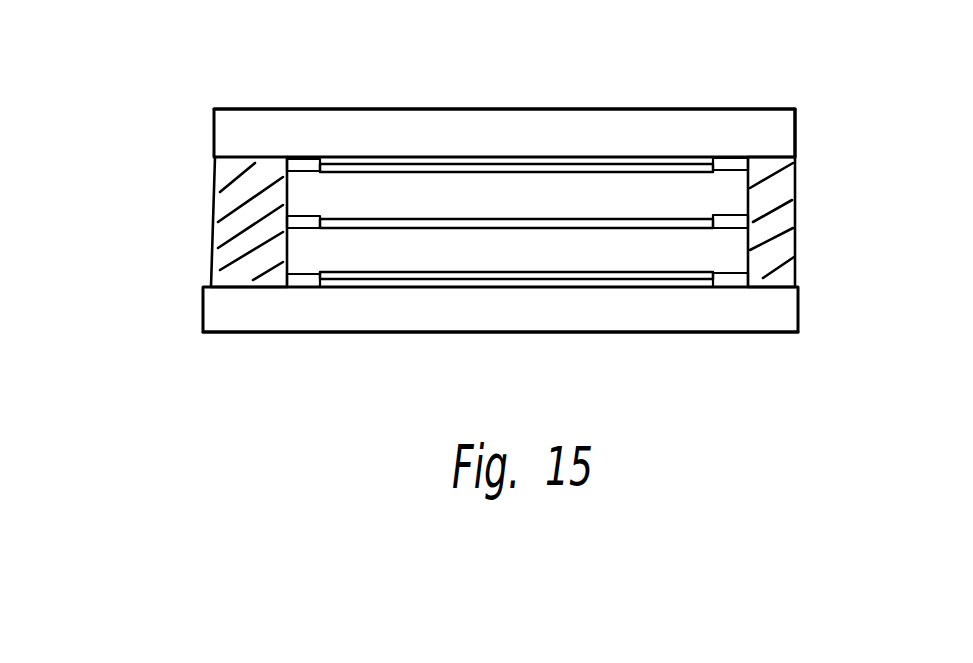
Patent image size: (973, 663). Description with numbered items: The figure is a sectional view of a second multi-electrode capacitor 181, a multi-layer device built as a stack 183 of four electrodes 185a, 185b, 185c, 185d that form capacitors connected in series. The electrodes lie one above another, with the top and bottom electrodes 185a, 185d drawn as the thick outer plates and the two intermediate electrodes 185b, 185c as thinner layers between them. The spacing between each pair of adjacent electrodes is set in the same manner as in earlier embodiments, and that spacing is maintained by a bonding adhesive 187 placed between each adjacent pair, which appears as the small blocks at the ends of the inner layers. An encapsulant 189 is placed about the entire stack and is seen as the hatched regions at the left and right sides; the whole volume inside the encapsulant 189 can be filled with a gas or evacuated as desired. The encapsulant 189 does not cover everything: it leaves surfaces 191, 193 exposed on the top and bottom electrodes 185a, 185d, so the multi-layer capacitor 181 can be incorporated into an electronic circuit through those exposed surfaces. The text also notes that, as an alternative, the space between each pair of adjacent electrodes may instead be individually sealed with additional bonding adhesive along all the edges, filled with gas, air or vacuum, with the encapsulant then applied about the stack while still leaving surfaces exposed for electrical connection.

The second multi-electrode capacitor 181 is at (200, 96).
The stack 183 is at (214, 137).
The electrode 185a is at (790, 307).
The electrode 185b is at (742, 250).
The electrode 185c is at (742, 188).
The electrode 185d is at (796, 118).
The bonding adhesive 187 is at (733, 278).
The encapsulant 189 is at (222, 258).
The surface 191 is at (309, 333).
The surface 193 is at (306, 98).